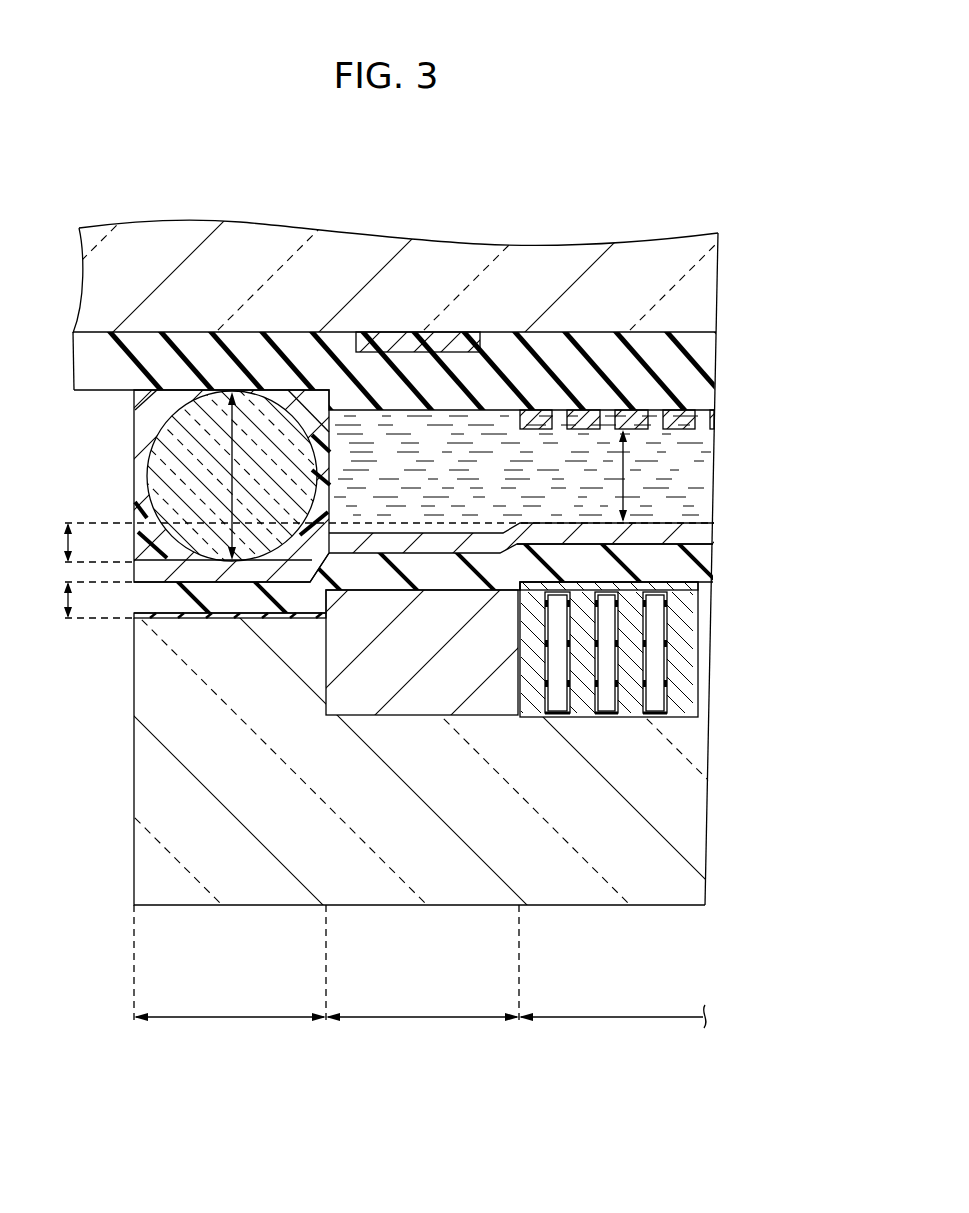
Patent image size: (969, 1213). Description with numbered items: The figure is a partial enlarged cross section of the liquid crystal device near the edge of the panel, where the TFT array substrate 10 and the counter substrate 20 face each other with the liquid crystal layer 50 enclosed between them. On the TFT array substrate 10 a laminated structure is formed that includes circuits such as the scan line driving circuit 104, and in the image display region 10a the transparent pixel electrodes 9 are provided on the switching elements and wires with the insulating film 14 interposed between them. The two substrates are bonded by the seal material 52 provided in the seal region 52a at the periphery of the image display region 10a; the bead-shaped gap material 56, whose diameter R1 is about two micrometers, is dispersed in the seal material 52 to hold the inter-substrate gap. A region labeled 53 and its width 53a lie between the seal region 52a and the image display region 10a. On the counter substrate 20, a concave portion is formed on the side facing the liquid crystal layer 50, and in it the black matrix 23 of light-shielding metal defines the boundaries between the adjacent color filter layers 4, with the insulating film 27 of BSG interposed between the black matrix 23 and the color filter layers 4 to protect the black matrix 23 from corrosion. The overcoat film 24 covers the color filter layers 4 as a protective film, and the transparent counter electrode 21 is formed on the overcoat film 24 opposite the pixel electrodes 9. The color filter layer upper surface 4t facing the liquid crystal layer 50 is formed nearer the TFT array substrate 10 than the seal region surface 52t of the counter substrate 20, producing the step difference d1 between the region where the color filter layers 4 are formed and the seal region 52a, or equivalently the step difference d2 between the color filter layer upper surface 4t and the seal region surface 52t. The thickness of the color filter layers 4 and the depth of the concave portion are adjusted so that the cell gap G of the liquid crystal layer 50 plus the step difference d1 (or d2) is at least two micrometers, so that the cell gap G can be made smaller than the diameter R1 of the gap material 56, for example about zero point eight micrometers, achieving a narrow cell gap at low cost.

The TFT array substrate 10 is at (690, 283).
The scan line driving circuit 104 is at (412, 332).
The insulating film 14 is at (692, 371).
The pixel electrodes 9 is at (570, 410).
The liquid crystal layer 50 is at (678, 481).
The cell gap G is at (626, 463).
The counter electrode 21 is at (697, 536).
The overcoat film 24 is at (683, 566).
The seal material 52 is at (157, 407).
The gap material 56 is at (170, 461).
The diameter of the gap material R1 is at (232, 487).
The step difference d1 is at (371, 542).
The step difference d2 is at (81, 600).
The seal region surface 52t is at (223, 624).
The support block 53 is at (441, 690).
The insulating film 27 is at (682, 597).
The color filter layers 4 is at (683, 662).
The color filter layer upper surface 4t is at (693, 628).
The black matrix 23 is at (655, 705).
The counter substrate 20 is at (693, 835).
The seal region 52a is at (230, 1005).
The width of support block 53a is at (422, 1005).
The image display region 10a is at (612, 1009).